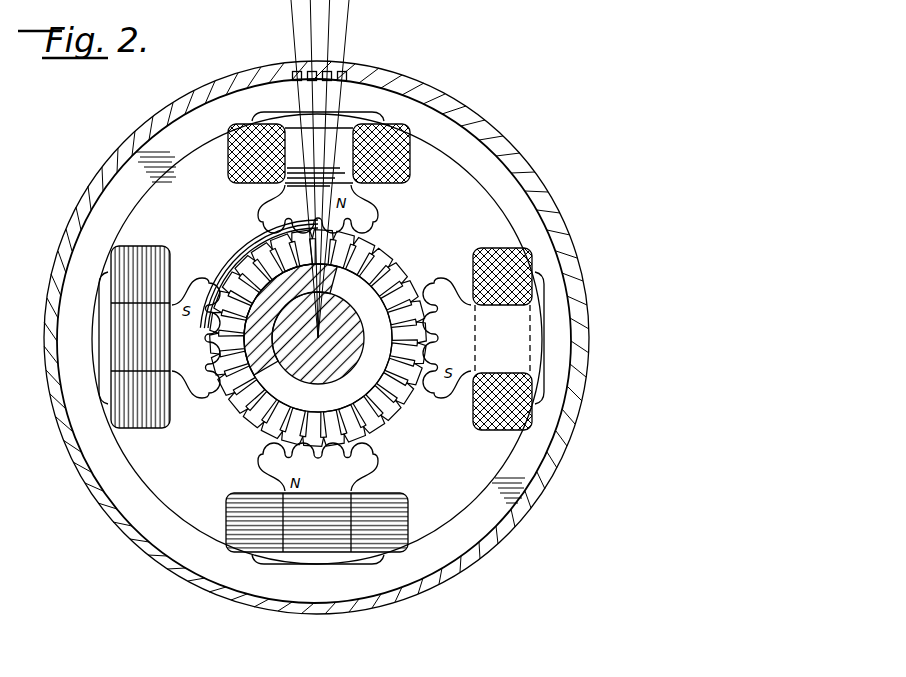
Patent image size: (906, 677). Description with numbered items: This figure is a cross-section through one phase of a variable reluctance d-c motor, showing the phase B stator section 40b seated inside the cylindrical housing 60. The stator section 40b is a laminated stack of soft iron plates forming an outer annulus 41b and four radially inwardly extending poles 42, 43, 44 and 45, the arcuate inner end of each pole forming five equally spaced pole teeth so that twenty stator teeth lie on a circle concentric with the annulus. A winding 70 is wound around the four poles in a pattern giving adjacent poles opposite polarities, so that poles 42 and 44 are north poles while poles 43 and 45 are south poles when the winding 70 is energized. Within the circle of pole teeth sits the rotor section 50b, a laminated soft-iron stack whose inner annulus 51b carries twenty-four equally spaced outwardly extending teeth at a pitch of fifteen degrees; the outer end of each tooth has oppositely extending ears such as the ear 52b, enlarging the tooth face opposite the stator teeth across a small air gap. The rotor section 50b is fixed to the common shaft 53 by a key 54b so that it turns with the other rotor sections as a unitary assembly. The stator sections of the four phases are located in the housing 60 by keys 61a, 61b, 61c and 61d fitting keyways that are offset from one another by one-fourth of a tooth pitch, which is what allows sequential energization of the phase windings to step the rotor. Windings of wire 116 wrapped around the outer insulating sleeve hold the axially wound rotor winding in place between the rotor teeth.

The stator section 40b is at (425, 592).
The outer annulus 41b is at (470, 512).
The pole 42 is at (364, 118).
The pole 43 is at (517, 298).
The pole 44 is at (268, 474).
The pole 45 is at (176, 268).
The rotor section 50b is at (345, 306).
The inner annulus 51b is at (382, 270).
The ear 52b is at (327, 340).
The shaft 53 is at (247, 410).
The key 54b is at (262, 436).
The cylindrical housing 60 is at (562, 212).
The key 61a is at (294, 70).
The key 61b is at (314, 70).
The key 61c is at (332, 70).
The key 61d is at (347, 73).
The winding 70 is at (225, 136).
The windings of wire 116 is at (236, 264).